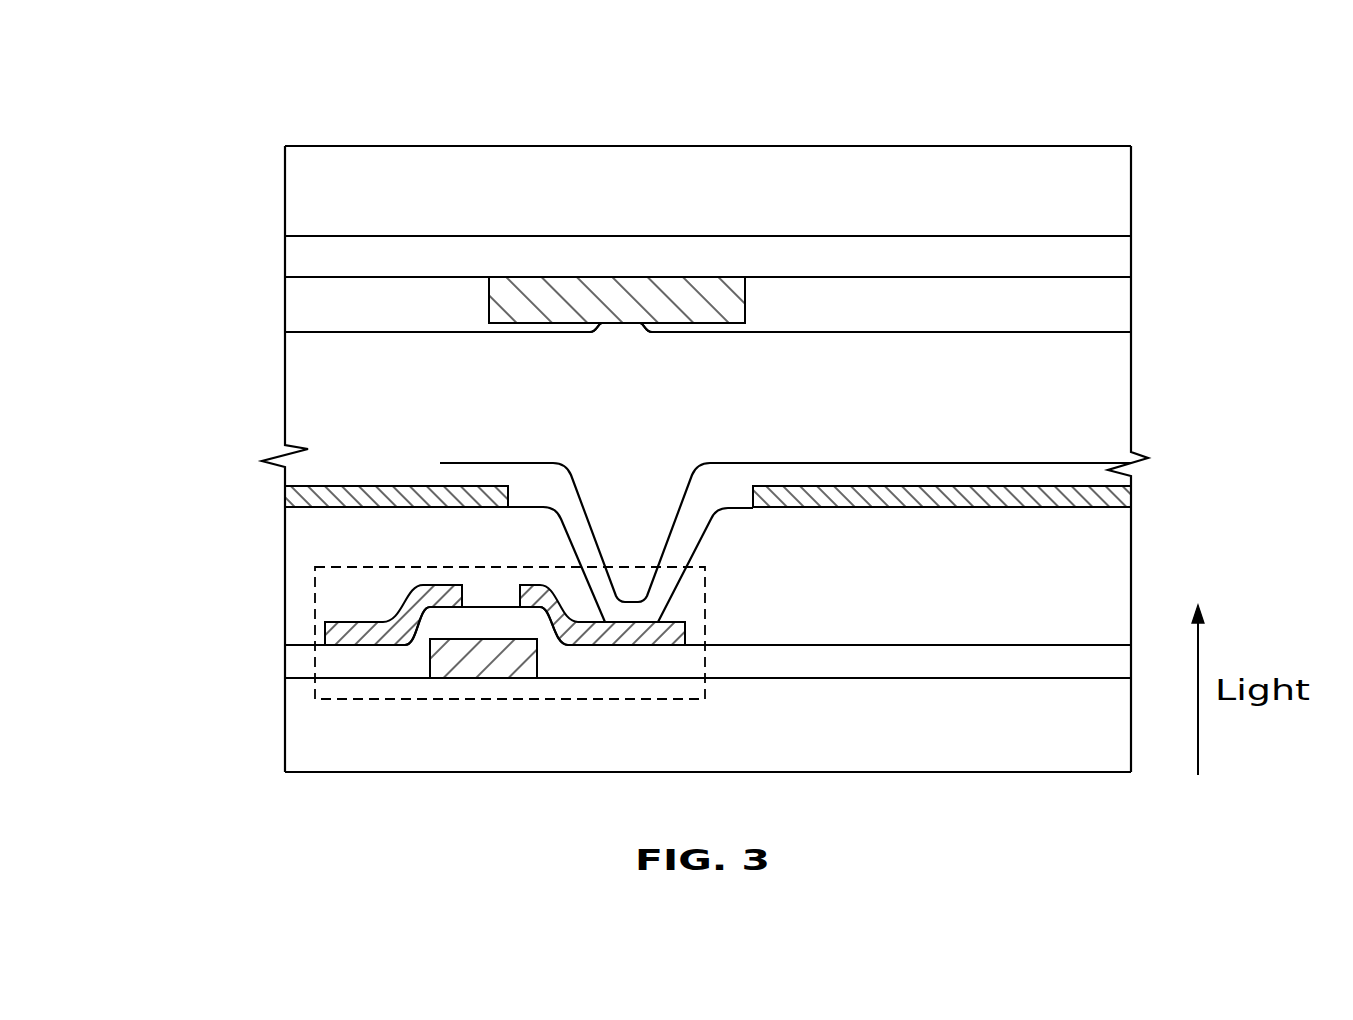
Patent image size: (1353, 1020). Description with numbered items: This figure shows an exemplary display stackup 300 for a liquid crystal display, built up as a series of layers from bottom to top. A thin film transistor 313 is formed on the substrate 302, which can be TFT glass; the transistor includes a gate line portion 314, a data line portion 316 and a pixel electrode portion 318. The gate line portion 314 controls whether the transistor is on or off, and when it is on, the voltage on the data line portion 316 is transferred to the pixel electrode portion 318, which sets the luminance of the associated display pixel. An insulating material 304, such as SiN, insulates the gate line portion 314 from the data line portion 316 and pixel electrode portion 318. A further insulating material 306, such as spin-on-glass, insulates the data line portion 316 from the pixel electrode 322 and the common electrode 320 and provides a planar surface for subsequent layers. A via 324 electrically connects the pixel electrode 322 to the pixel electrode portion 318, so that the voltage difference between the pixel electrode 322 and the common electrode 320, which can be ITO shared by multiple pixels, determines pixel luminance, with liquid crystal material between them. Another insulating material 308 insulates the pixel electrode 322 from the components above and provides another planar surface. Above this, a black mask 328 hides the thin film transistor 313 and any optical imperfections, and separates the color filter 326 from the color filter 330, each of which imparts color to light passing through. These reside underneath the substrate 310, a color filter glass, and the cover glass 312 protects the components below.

The display stackup 300 is at (190, 75).
The substrate 302 is at (315, 733).
The material 304 is at (315, 658).
The material 306 is at (315, 568).
The material 308 is at (315, 382).
The substrate 310 is at (315, 257).
The cover glass 312 is at (315, 183).
The thin film transistor 313 is at (645, 700).
The gate line portion 314 is at (492, 672).
The data line portion 316 is at (440, 595).
The pixel electrode portion 318 is at (686, 635).
The common electrode 320 is at (400, 492).
The pixel electrode 322 is at (945, 462).
The via 324 is at (632, 515).
The color filter 326 is at (430, 323).
The black mask 328 is at (610, 318).
The color filter 330 is at (800, 320).